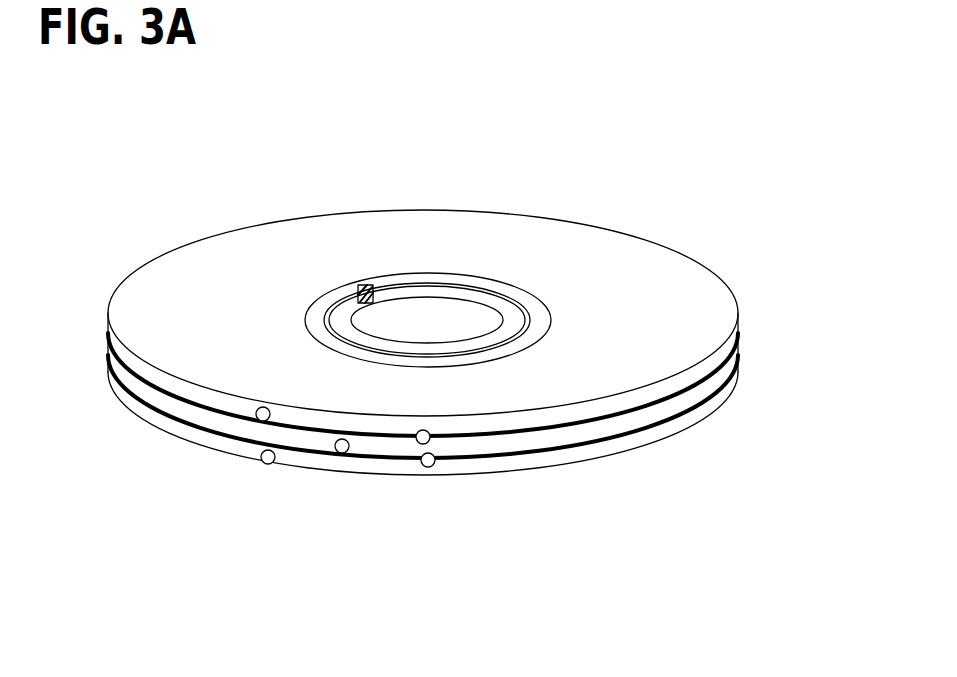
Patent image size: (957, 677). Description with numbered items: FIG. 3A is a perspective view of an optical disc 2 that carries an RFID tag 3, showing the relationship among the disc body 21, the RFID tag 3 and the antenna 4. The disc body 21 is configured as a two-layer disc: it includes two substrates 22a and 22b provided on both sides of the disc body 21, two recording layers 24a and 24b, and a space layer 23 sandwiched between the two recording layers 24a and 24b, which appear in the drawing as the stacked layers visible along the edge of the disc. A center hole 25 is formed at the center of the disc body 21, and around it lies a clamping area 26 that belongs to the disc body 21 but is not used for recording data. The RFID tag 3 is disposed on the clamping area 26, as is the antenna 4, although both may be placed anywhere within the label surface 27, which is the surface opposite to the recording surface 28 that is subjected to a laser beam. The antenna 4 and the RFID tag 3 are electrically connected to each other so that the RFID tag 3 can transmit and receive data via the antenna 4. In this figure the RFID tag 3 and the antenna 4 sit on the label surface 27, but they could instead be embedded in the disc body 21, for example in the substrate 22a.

The optical disc 2 is at (443, 100).
The RFID tag 3 is at (345, 288).
The antenna 4 is at (323, 317).
The disc body 21 is at (293, 219).
The substrate 22a is at (256, 417).
The substrate 22b is at (262, 463).
The space layer 23 is at (348, 450).
The recording layer 24a is at (433, 464).
The recording layer 24b is at (430, 440).
The center hole 25 is at (412, 318).
The clamping area 26 is at (528, 302).
The label surface 27 is at (697, 295).
The recording surface 28 is at (663, 443).